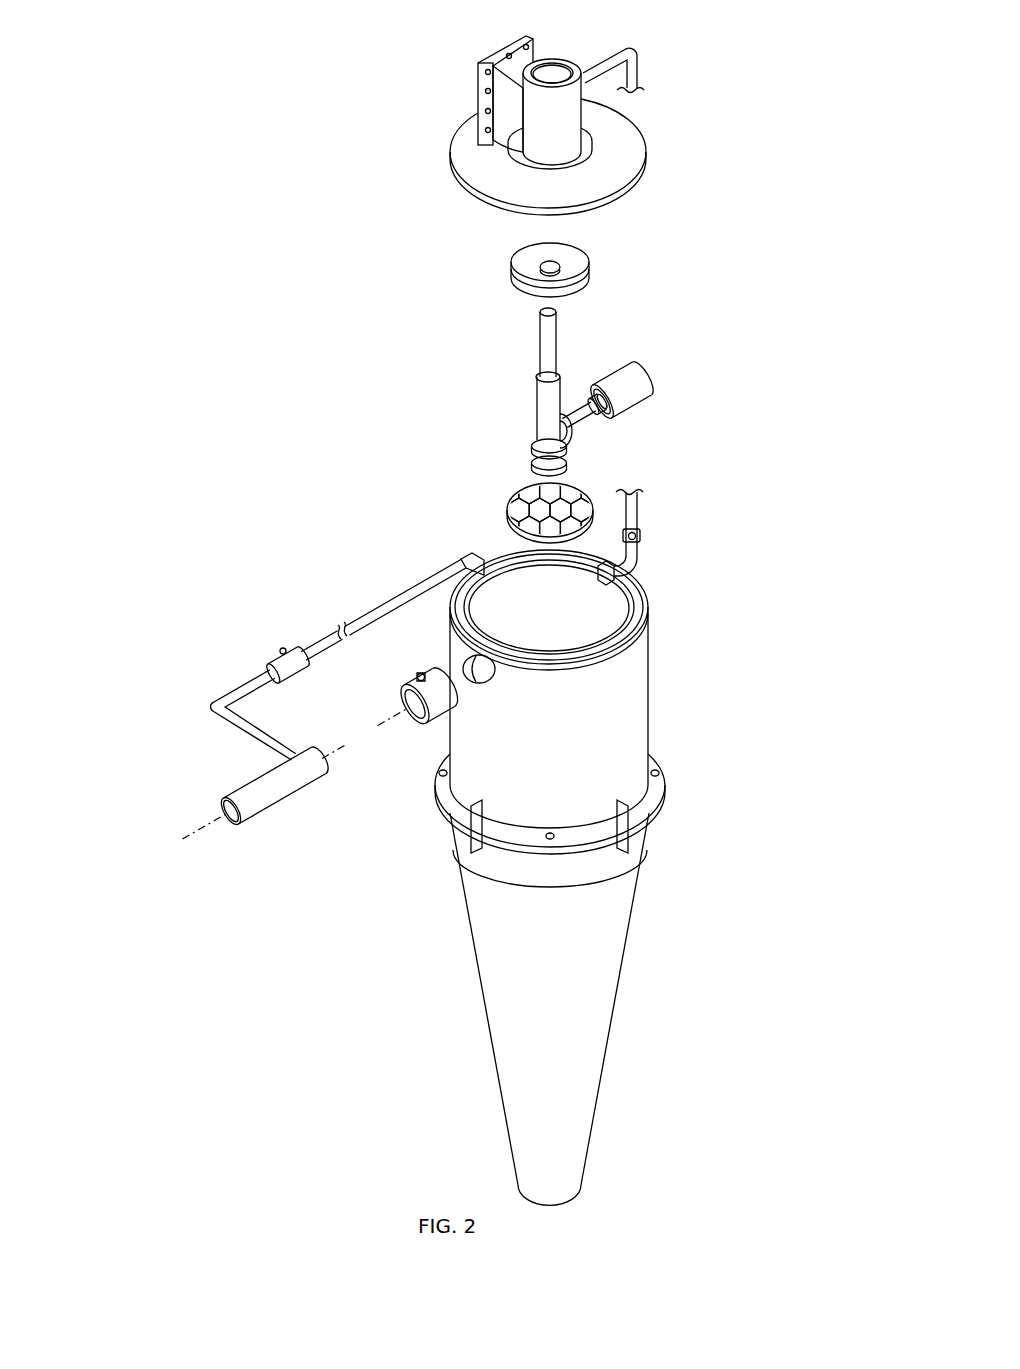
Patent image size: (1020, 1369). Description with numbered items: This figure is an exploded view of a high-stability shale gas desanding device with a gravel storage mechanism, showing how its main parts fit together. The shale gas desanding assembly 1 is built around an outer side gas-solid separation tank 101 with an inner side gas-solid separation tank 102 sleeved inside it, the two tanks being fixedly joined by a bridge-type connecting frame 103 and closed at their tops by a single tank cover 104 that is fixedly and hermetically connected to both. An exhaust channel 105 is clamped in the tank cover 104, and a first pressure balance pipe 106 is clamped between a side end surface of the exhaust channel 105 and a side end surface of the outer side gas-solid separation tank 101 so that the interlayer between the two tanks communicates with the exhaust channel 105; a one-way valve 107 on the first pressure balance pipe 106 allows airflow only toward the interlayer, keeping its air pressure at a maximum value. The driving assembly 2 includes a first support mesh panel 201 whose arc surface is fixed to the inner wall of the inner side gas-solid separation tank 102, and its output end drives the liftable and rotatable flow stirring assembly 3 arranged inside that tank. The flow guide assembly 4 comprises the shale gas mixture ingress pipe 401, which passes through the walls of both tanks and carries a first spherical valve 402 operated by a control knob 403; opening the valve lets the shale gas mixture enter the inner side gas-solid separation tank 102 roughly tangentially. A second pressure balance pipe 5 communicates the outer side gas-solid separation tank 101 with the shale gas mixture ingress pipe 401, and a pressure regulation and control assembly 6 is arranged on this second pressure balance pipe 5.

The shale gas desanding assembly 1 is at (618, 997).
The outer side gas-solid separation tank 101 is at (587, 940).
The inner side gas-solid separation tank 102 is at (633, 623).
The bridge-type connecting frame 103 is at (617, 647).
The tank cover 104 is at (633, 133).
The exhaust channel 105 is at (550, 148).
The first pressure balance pipe 106 is at (638, 65).
The one-way valve 107 is at (638, 543).
The driving assembly 2 is at (647, 381).
The first support mesh panel 201 is at (552, 503).
The flow stirring assembly 3 is at (516, 284).
The flow guide assembly 4 is at (227, 833).
The shale gas mixture ingress pipe 401 is at (230, 806).
The first spherical valve 402 is at (418, 726).
The control knob 403 is at (421, 677).
The second pressure balance pipe 5 is at (213, 705).
The pressure regulation and control assembly 6 is at (283, 652).